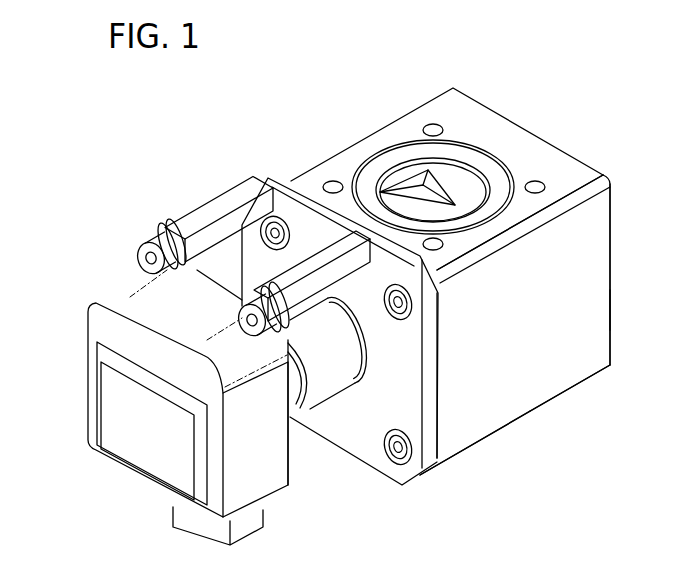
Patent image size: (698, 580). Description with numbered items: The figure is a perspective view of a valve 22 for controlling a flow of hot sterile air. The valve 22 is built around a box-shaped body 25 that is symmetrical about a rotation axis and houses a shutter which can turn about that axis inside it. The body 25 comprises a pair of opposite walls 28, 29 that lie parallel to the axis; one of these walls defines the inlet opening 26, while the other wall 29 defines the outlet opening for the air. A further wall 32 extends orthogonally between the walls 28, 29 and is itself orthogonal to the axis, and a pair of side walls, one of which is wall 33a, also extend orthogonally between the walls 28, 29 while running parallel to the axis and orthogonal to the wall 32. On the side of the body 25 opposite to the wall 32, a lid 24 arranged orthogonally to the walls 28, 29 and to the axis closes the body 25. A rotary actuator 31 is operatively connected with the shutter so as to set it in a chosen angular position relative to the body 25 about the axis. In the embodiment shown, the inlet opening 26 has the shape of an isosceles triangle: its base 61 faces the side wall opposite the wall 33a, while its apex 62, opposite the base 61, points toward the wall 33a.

The valve 22 is at (607, 120).
The lid 24 is at (368, 450).
The body 25 is at (559, 429).
The inlet opening 26 is at (430, 140).
The wall 28 is at (549, 160).
The wall 29 is at (469, 458).
The rotary actuator 31 is at (274, 445).
The wall 32 is at (605, 168).
The wall 33a is at (582, 271).
The base 61 is at (456, 190).
The apex 62 is at (398, 158).